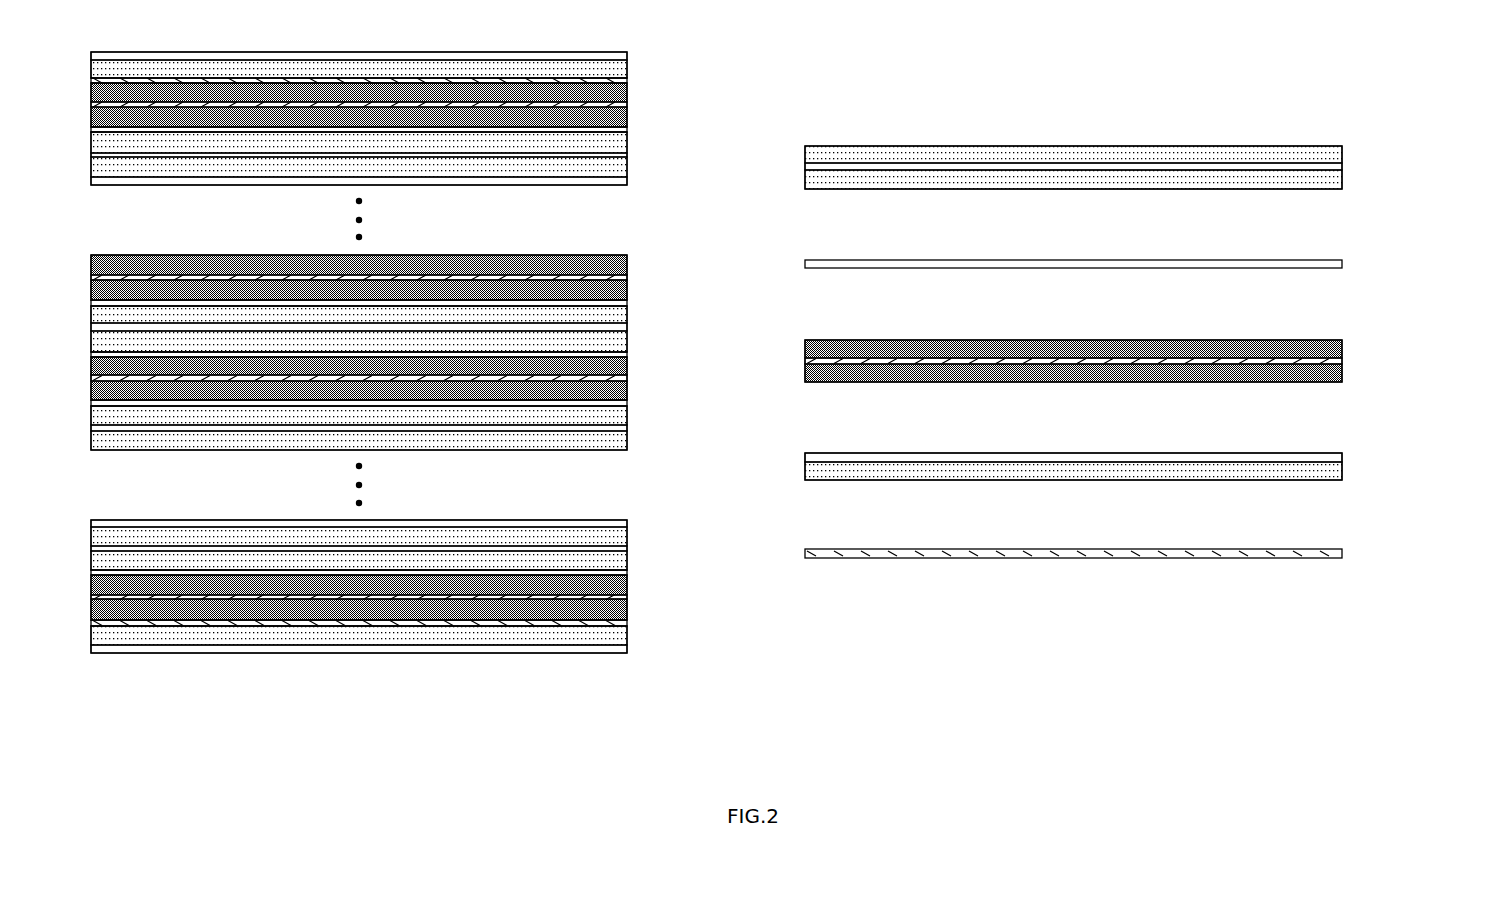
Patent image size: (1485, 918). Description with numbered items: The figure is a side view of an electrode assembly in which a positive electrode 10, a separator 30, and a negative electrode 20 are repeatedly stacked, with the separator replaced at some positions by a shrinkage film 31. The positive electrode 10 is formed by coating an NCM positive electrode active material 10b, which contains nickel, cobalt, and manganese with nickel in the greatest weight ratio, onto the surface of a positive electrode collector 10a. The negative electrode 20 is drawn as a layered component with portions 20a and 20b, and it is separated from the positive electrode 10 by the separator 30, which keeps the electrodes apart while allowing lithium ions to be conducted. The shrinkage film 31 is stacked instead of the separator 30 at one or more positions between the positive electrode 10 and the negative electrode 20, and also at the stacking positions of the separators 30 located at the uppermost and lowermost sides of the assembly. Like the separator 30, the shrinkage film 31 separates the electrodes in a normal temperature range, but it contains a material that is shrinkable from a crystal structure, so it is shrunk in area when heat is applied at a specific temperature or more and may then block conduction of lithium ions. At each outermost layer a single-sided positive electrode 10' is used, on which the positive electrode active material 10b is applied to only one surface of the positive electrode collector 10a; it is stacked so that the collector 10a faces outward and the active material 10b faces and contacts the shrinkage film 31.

The positive electrode 10 is at (775, 351).
The positive electrode collector 10a is at (627, 548).
The NCM positive electrode active material 10b is at (627, 537).
The single-sided positive electrode 10' is at (775, 357).
The negative electrode 20 is at (1422, 342).
The first active material layer of second electrode 20a is at (1342, 362).
The second active material layer of second electrode 20b is at (1342, 346).
The separator 30 is at (627, 573).
The shrinkage film 31 is at (627, 80).